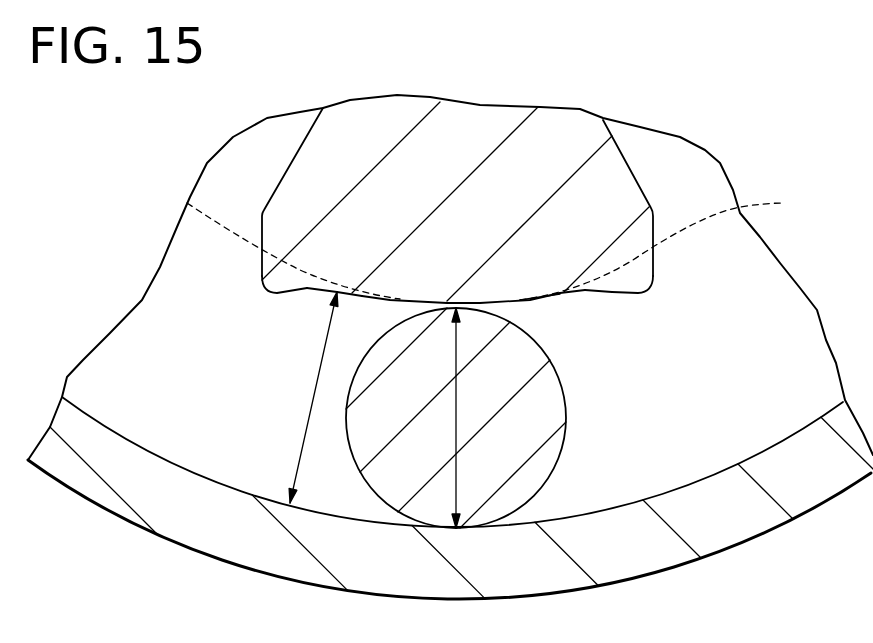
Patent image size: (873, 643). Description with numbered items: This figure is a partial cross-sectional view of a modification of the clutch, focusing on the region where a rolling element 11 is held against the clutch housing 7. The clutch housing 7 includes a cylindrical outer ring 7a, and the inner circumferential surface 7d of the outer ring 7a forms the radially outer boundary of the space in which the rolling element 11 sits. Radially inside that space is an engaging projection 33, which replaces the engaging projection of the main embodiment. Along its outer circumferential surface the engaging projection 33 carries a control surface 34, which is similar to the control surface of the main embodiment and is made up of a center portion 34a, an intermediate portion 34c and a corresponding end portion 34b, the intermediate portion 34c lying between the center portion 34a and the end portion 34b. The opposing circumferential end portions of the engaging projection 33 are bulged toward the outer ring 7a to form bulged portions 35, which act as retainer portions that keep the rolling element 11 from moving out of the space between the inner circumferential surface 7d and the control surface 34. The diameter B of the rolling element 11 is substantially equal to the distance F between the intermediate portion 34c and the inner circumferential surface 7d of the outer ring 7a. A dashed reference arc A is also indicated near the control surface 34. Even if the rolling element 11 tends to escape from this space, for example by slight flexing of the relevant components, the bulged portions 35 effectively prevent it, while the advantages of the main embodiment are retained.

The clutch housing 7 is at (745, 542).
The outer ring 7a is at (643, 574).
The inner circumferential surface 7d is at (601, 509).
The rolling element 11 is at (557, 415).
The engaging projection 33 is at (624, 186).
The control surface 34 is at (530, 307).
The center portion 34a is at (480, 302).
The end portion 34b is at (323, 290).
The intermediate portion 34c is at (353, 295).
The bulged portion 35 is at (278, 296).
The reference arc A is at (499, 243).
The diameter B is at (457, 413).
The distance F is at (304, 436).